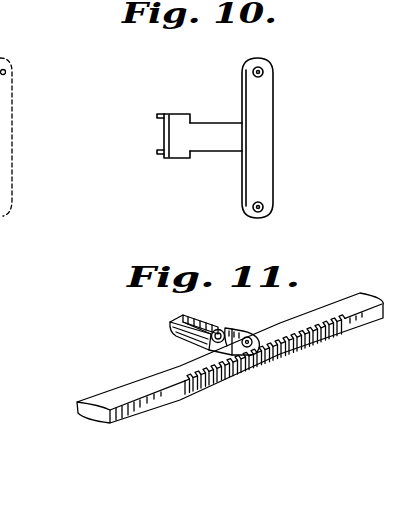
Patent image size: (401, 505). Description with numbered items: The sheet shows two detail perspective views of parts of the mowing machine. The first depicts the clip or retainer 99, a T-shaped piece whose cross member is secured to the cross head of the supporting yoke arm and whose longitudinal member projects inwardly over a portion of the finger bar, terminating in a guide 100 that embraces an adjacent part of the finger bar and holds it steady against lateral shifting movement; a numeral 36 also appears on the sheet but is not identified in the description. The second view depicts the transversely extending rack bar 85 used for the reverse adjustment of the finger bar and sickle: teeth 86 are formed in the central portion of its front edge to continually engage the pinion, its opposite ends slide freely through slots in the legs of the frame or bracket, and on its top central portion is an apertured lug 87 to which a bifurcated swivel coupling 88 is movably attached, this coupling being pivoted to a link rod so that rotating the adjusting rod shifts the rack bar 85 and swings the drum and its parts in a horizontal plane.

In FIG. 10, the frame 36 is at (329, 9).
In FIG. 10, the clip or retainer 99 is at (236, 138).
In FIG. 10, the guide 100 is at (164, 141).
In FIG. 11, the rack bar 85 is at (143, 378).
In FIG. 11, the teeth 86 is at (213, 383).
In FIG. 11, the apertured lug 87 is at (227, 328).
In FIG. 11, the bifurcated swivel coupling 88 is at (175, 332).